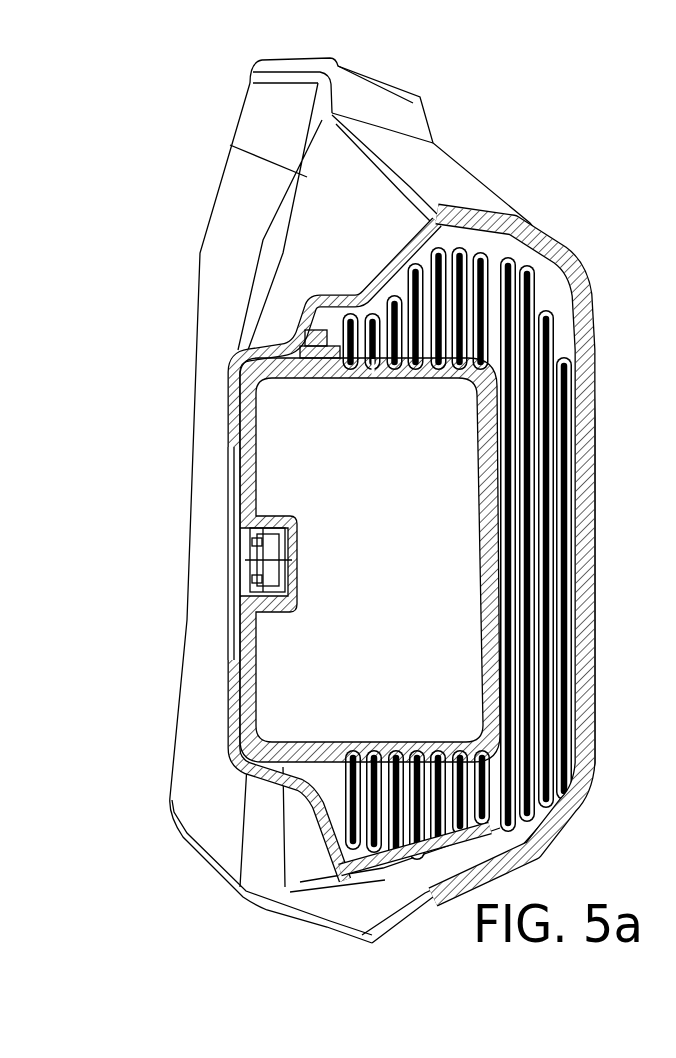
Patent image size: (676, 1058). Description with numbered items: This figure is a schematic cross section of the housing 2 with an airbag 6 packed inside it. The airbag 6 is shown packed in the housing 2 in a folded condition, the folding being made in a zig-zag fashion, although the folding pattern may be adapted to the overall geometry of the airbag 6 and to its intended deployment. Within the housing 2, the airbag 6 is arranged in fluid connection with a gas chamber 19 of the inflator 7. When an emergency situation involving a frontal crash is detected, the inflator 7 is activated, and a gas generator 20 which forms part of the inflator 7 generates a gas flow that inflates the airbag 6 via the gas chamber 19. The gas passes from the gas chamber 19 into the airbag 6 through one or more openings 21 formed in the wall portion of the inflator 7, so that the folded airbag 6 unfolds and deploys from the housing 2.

The housing 2 is at (558, 293).
The airbag 6 is at (550, 337).
The inflator 7 is at (260, 548).
The gas chamber 19 is at (352, 457).
The gas generator 20 is at (260, 575).
The openings 21 is at (373, 380).